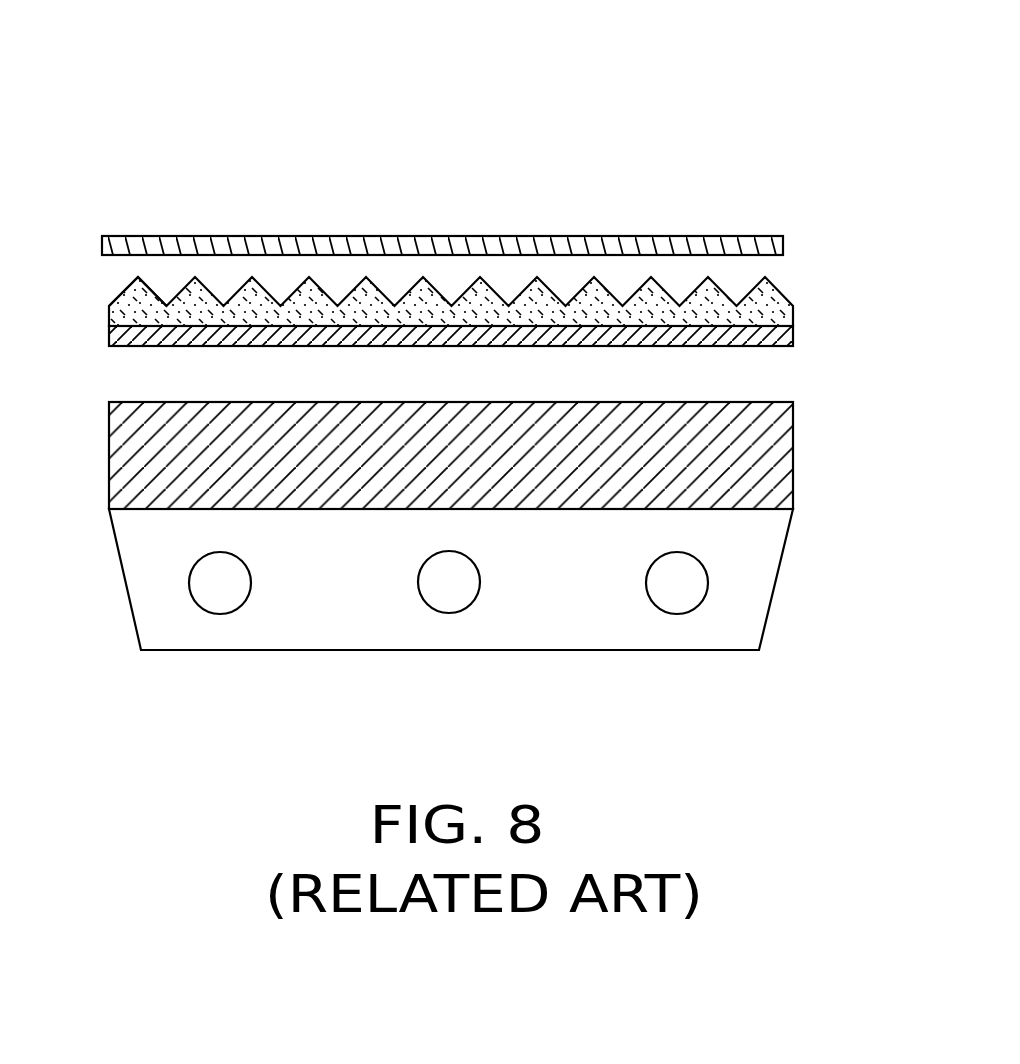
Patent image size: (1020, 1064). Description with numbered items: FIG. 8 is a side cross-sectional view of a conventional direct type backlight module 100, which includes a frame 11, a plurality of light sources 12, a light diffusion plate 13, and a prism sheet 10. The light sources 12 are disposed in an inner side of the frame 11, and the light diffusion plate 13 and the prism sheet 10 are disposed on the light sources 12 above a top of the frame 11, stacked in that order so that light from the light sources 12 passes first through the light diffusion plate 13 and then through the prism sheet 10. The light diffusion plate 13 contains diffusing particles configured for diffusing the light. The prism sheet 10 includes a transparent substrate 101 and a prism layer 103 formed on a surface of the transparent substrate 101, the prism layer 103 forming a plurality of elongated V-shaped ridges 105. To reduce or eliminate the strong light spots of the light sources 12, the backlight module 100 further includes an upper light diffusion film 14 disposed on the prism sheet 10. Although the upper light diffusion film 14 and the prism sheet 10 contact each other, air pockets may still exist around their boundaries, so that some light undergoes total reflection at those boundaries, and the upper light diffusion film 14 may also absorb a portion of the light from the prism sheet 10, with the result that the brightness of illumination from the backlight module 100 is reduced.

The direct type backlight module 100 is at (364, 74).
The prism sheet 10 is at (476, 309).
The transparent substrate 101 is at (774, 340).
The prism layer 103 is at (768, 320).
The elongated V-shaped ridges 105 is at (134, 285).
The frame 11 is at (772, 593).
The light sources 12 is at (687, 573).
The light diffusion plate 13 is at (793, 456).
The upper light diffusion film 14 is at (780, 244).